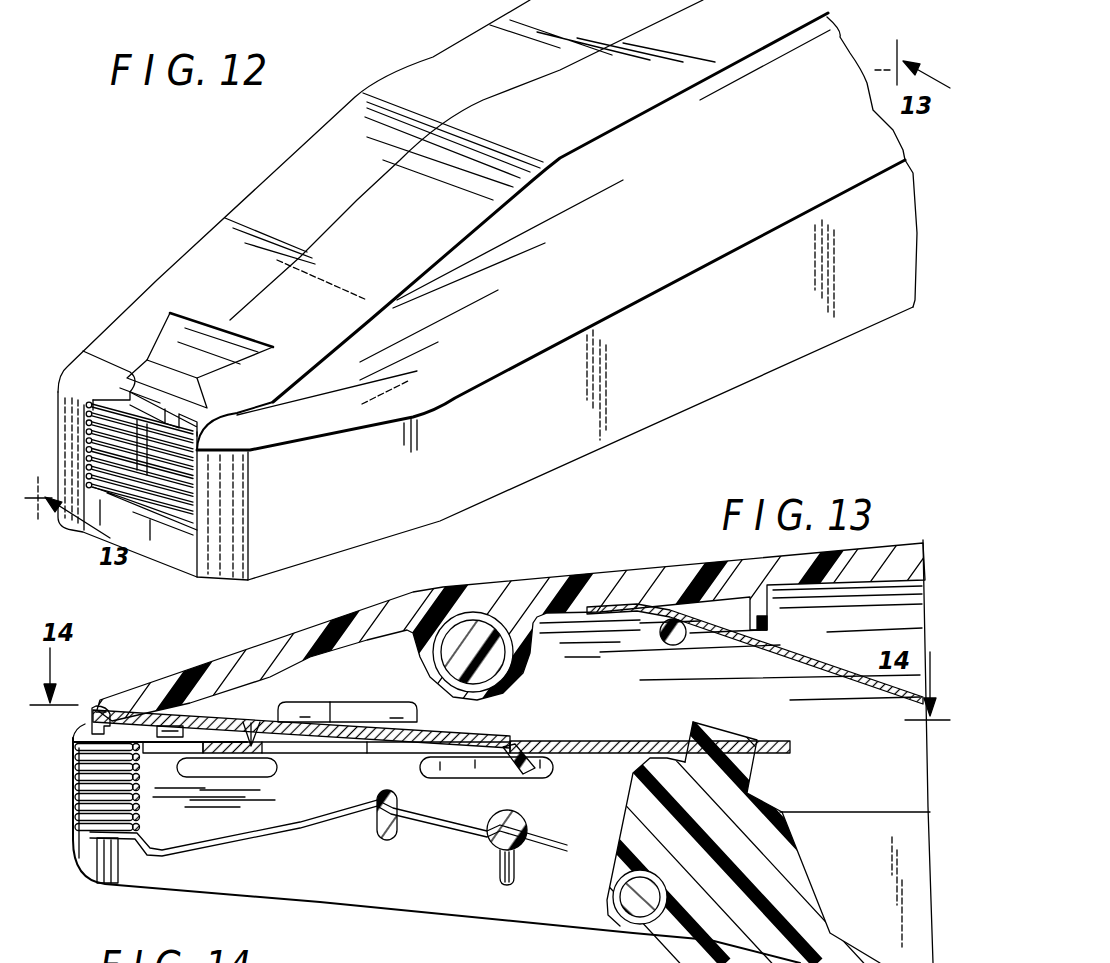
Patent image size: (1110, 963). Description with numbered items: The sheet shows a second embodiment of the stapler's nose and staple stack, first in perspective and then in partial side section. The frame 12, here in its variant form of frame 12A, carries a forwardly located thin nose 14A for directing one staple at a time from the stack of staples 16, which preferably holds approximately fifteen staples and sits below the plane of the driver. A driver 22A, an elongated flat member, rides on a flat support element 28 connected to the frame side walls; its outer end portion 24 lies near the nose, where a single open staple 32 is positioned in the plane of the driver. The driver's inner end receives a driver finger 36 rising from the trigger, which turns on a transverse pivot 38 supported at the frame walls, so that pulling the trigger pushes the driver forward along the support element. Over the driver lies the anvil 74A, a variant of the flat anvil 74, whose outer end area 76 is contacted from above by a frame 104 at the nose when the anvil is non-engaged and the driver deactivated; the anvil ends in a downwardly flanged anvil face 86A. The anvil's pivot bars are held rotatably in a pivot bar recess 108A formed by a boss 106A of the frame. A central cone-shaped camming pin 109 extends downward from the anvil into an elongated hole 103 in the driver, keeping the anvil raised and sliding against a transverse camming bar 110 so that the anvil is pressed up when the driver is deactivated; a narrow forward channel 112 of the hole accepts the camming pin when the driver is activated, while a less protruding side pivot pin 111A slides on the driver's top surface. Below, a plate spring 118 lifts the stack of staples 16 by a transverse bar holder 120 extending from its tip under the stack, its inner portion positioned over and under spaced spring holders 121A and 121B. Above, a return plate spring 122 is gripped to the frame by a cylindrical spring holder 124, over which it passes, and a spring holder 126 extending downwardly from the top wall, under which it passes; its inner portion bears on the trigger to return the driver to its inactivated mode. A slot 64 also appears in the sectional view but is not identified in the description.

In FIG. 12, the frame 12 is at (218, 224).
In FIG. 12, the frame 12A is at (836, 56).
In FIG. 13, the frame 12A is at (493, 590).
In FIG. 12, the stack of staples 16 is at (87, 452).
In FIG. 13, the stack of staples 16 is at (146, 762).
In FIG. 12, the anvil 74 is at (217, 387).
In FIG. 13, the anvil 74A is at (503, 734).
In FIG. 13, the outer end area 76 is at (137, 708).
In FIG. 12, the anvil face 86A is at (131, 404).
In FIG. 13, the anvil face 86A is at (85, 722).
In FIG. 12, the frame 104 is at (232, 341).
In FIG. 13, the frame 104 is at (167, 708).
In FIG. 12, the plate spring 118 is at (157, 517).
In FIG. 13, the plate spring 118 is at (313, 828).
In FIG. 12, the transverse bar holder 120 is at (117, 503).
In FIG. 13, the transverse bar holder 120 is at (90, 833).
In FIG. 13, the nose 14A is at (122, 700).
In FIG. 13, the outer end portion 24 is at (70, 742).
In FIG. 13, the single open staple 32 is at (77, 750).
In FIG. 13, the flat support element 28 is at (237, 772).
In FIG. 13, the camming pin 109 is at (252, 722).
In FIG. 13, the boss 106A is at (330, 694).
In FIG. 13, the pivot bar recess 108A is at (377, 720).
In FIG. 13, the transverse camming bar 110 is at (237, 772).
In FIG. 13, the side pivot pin 111A is at (313, 753).
In FIG. 13, the channel 112 is at (283, 750).
In FIG. 13, the elongated hole 103 is at (377, 753).
In FIG. 13, the spring holder 121A is at (390, 834).
In FIG. 13, the spring holder 121B is at (510, 808).
In FIG. 13, the slot 64 is at (527, 778).
In FIG. 13, the driver 22A is at (597, 741).
In FIG. 13, the driver finger 36 is at (745, 740).
In FIG. 13, the spring holder 126 is at (747, 607).
In FIG. 13, the return plate spring 122 is at (812, 650).
In FIG. 13, the spring holder 124 is at (677, 645).
In FIG. 13, the pivot 38 is at (613, 927).